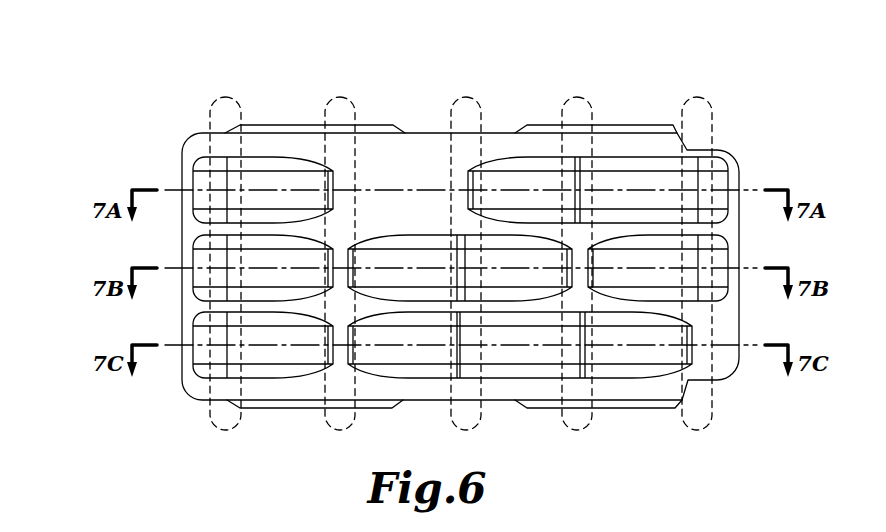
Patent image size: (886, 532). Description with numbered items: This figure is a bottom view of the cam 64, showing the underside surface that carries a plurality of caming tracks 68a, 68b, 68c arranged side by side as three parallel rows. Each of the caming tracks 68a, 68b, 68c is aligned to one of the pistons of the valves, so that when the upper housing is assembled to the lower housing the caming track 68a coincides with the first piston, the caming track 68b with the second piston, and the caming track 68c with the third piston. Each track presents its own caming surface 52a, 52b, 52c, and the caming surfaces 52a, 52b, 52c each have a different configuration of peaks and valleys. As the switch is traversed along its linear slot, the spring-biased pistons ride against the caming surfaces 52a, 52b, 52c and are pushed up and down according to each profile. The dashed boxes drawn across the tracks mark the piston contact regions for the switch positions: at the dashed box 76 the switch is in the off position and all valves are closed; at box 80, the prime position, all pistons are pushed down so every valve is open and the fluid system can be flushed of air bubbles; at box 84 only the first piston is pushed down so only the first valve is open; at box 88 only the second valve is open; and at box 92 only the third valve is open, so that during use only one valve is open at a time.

The caming surface 52a is at (417, 165).
The caming surface 52b is at (390, 277).
The caming surface 52c is at (527, 353).
The cam 64 is at (630, 92).
The caming track 68a is at (82, 160).
The caming track 68b is at (82, 238).
The caming track 68c is at (82, 305).
The dashed box 76 is at (228, 96).
The box 80 is at (340, 235).
The box 84 is at (466, 235).
The box 88 is at (577, 235).
The box 92 is at (697, 235).